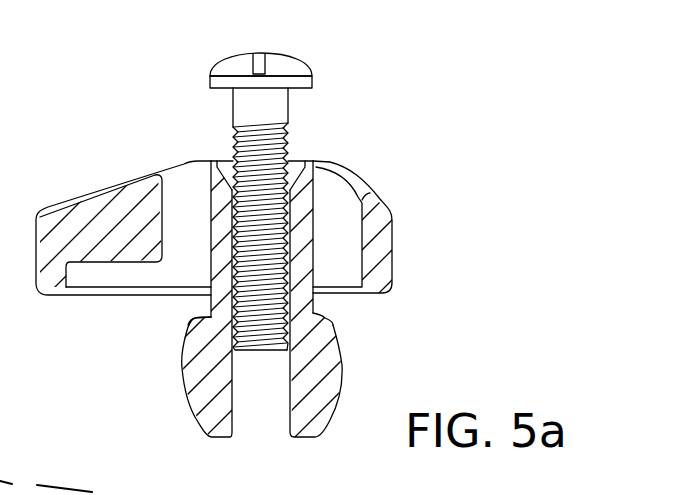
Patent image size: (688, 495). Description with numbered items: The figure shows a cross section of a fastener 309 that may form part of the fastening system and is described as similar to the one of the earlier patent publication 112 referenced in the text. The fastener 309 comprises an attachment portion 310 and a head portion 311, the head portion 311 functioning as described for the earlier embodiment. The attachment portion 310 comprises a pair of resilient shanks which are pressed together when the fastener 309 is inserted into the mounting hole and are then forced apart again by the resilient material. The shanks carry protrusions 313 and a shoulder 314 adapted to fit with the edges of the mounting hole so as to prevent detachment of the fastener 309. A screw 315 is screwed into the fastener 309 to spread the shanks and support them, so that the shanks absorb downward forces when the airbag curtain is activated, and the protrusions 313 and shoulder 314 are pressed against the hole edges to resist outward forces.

The fastener 309 is at (291, 248).
The head portion 311 is at (291, 291).
The screw 315 is at (243, 112).
The attachment portion 310 is at (164, 400).
The protrusions 313 is at (343, 357).
The shoulder 314 is at (336, 323).
The rail engagement lip 112 is at (209, 316).